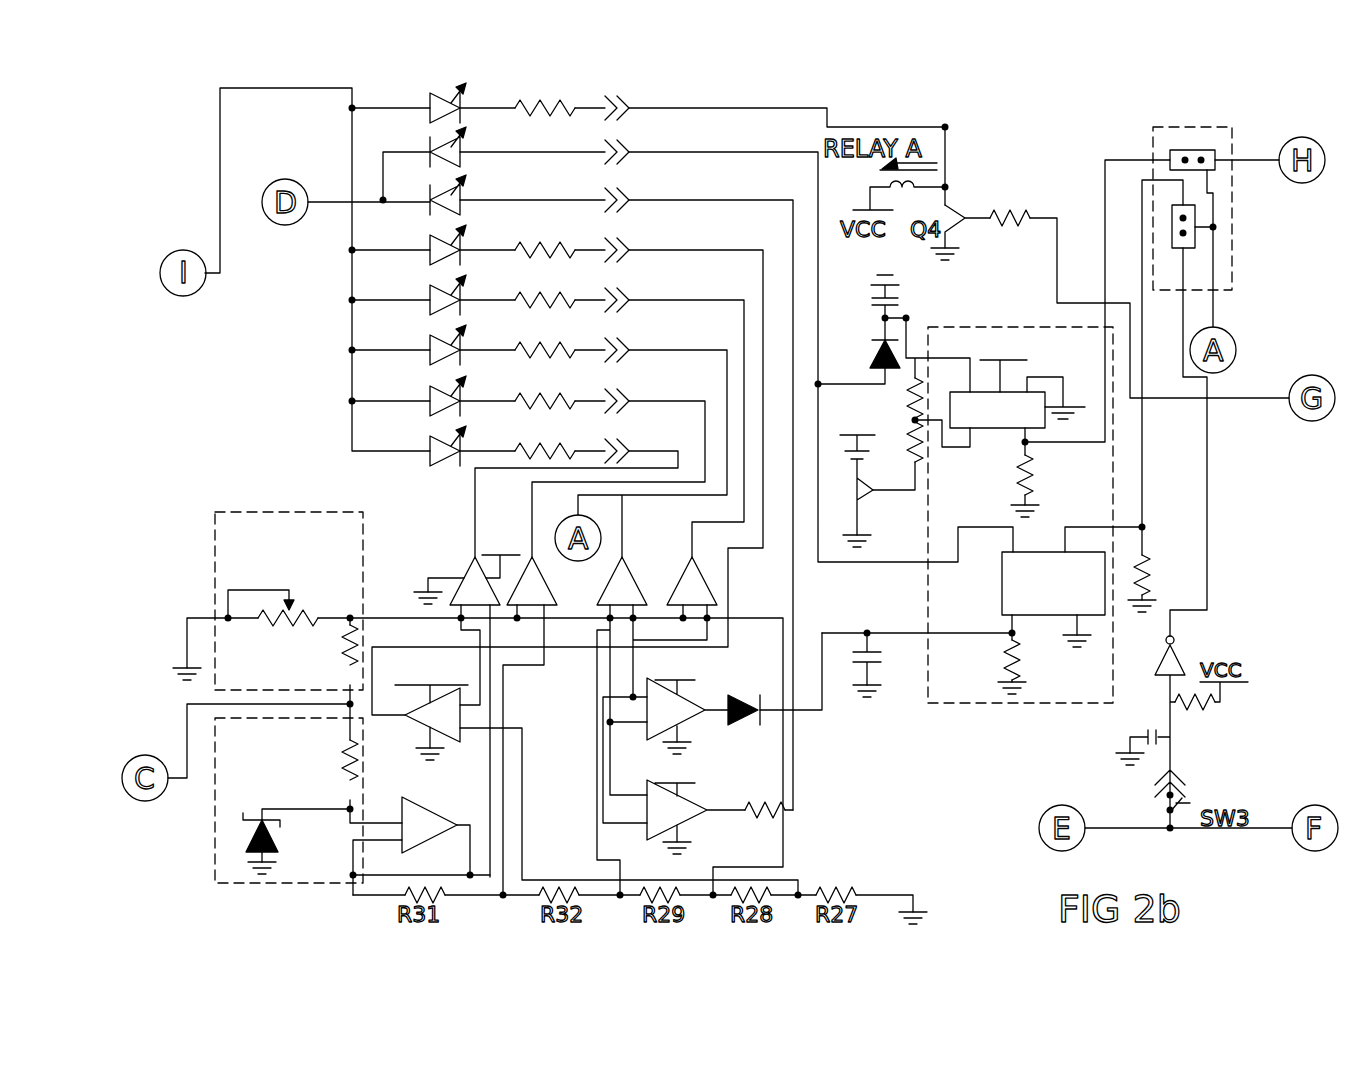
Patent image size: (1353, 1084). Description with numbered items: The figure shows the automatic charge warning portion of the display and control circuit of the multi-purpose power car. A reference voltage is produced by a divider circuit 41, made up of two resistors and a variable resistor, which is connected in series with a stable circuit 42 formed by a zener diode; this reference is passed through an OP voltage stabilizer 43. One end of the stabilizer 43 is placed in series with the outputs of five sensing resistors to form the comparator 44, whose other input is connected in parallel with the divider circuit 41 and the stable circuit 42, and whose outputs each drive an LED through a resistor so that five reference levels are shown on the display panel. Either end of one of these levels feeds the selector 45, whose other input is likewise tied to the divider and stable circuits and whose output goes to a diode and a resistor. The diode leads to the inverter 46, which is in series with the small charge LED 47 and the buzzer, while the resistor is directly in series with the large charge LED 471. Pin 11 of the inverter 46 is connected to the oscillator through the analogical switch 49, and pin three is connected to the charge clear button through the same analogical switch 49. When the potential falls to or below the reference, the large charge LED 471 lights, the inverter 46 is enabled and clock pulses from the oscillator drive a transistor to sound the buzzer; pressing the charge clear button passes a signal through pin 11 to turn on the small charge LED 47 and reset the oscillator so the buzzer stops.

The divider circuit 41 is at (266, 503).
The stable circuit 42 is at (211, 808).
The OP voltage stabilizer 43 is at (431, 757).
The comparator 44 is at (565, 574).
The selector 45 is at (775, 648).
The inverter 46 is at (962, 324).
The small charge LED 47 is at (529, 147).
The large charge LED 471 is at (529, 195).
The analogical switch 49 is at (1151, 201).
The PIN 11 of the inverter 11 is at (1193, 242).